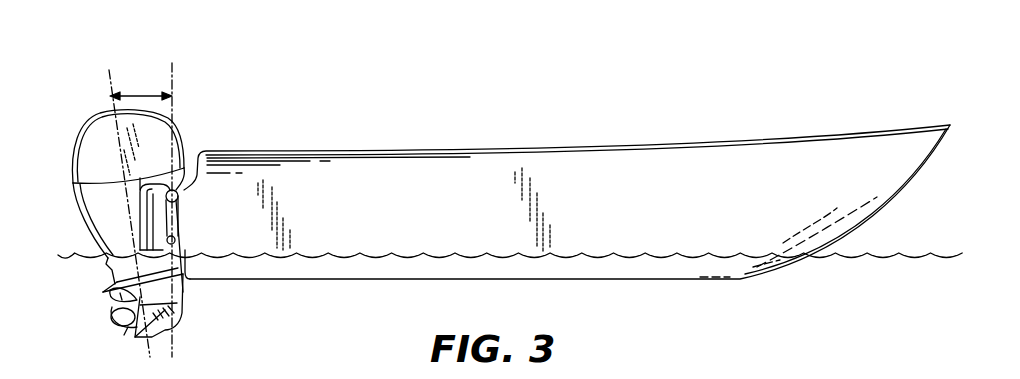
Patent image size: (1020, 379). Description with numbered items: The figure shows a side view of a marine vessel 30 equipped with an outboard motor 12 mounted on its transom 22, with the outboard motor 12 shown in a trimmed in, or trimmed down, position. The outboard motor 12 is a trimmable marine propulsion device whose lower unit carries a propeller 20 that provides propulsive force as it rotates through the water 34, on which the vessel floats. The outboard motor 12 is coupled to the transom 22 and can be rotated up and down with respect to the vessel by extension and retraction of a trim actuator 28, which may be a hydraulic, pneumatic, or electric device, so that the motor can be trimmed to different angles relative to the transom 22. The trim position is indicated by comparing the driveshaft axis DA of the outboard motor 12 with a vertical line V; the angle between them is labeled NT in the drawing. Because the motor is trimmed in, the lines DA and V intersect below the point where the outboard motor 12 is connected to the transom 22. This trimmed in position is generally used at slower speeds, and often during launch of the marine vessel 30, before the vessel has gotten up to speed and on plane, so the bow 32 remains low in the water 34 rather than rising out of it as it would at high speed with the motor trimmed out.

The outboard motor 12 is at (87, 122).
The propeller 20 is at (113, 312).
The transom 22 is at (178, 242).
The trim actuator 28 is at (182, 232).
The marine vessel 30 is at (736, 142).
The bow 32 is at (893, 201).
The water 34 is at (913, 258).
The driveshaft axis DA is at (111, 88).
The negative trim angle NT is at (148, 95).
The vertical line V is at (175, 90).